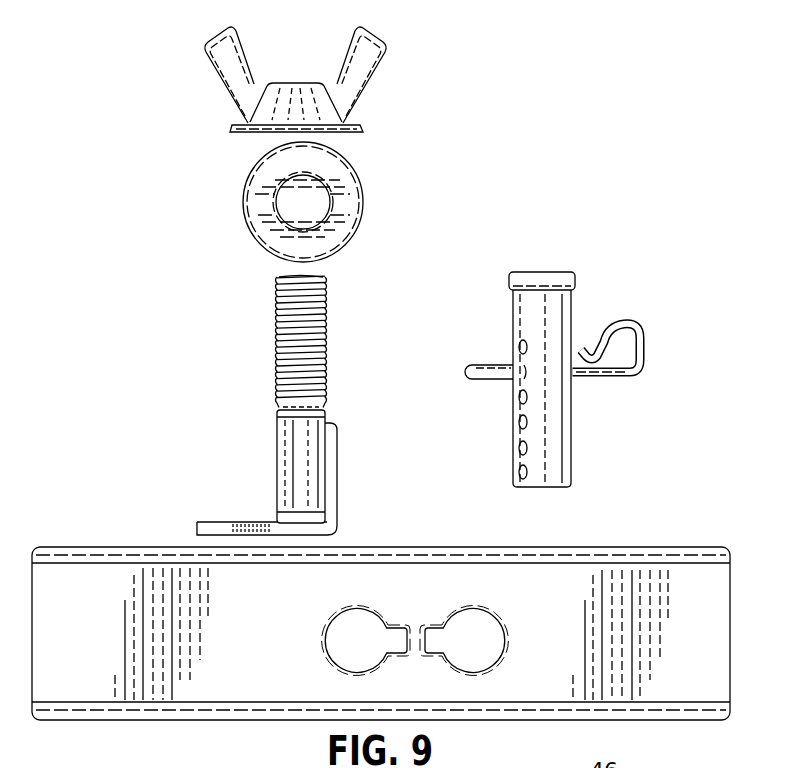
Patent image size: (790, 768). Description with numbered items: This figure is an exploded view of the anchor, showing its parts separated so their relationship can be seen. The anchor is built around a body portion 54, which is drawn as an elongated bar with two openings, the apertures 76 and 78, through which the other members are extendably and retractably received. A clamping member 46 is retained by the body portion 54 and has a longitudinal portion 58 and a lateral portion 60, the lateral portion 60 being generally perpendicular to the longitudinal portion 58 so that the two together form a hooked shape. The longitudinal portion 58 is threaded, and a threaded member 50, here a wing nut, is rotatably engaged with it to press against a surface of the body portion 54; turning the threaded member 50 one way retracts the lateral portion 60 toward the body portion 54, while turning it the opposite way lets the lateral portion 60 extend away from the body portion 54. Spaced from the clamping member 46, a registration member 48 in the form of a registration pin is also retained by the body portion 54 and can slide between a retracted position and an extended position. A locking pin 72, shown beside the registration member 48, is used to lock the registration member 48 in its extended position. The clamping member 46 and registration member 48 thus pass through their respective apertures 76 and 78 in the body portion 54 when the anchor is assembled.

The clamping member 46 is at (358, 337).
The registration member 48 is at (572, 305).
The threaded member 50 is at (375, 88).
The body portion 54 is at (695, 547).
The longitudinal portion 58 is at (277, 320).
The lateral portion 60 is at (222, 522).
The locking pin 72 is at (643, 350).
The aperture 76 is at (476, 608).
The aperture 78 is at (331, 623).